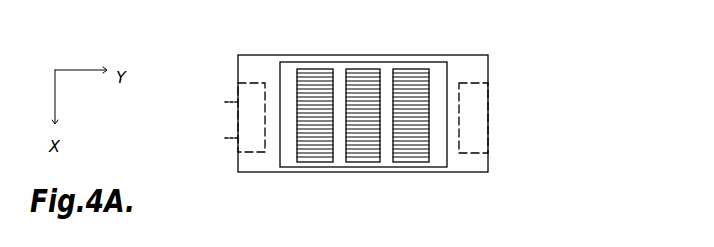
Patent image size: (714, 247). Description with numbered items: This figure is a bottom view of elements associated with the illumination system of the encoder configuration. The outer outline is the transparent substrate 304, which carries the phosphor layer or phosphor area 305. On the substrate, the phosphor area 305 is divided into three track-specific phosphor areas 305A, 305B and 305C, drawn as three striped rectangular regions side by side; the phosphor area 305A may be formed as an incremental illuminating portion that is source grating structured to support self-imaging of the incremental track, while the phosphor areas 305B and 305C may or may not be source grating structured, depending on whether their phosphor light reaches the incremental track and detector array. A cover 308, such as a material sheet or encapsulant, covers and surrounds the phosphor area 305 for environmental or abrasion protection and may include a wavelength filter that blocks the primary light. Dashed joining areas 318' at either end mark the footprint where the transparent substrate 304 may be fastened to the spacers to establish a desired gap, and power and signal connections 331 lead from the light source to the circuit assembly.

The transparent substrate 304 is at (488, 73).
The cover 308 is at (447, 70).
The joining areas 318' is at (359, 105).
The power and signal connections 331 is at (224, 137).
The phosphor area 305 is at (407, 155).
The track-specific phosphor area 305A is at (362, 150).
The track-specific phosphor area 305B is at (313, 150).
The track-specific phosphor area 305C is at (403, 150).